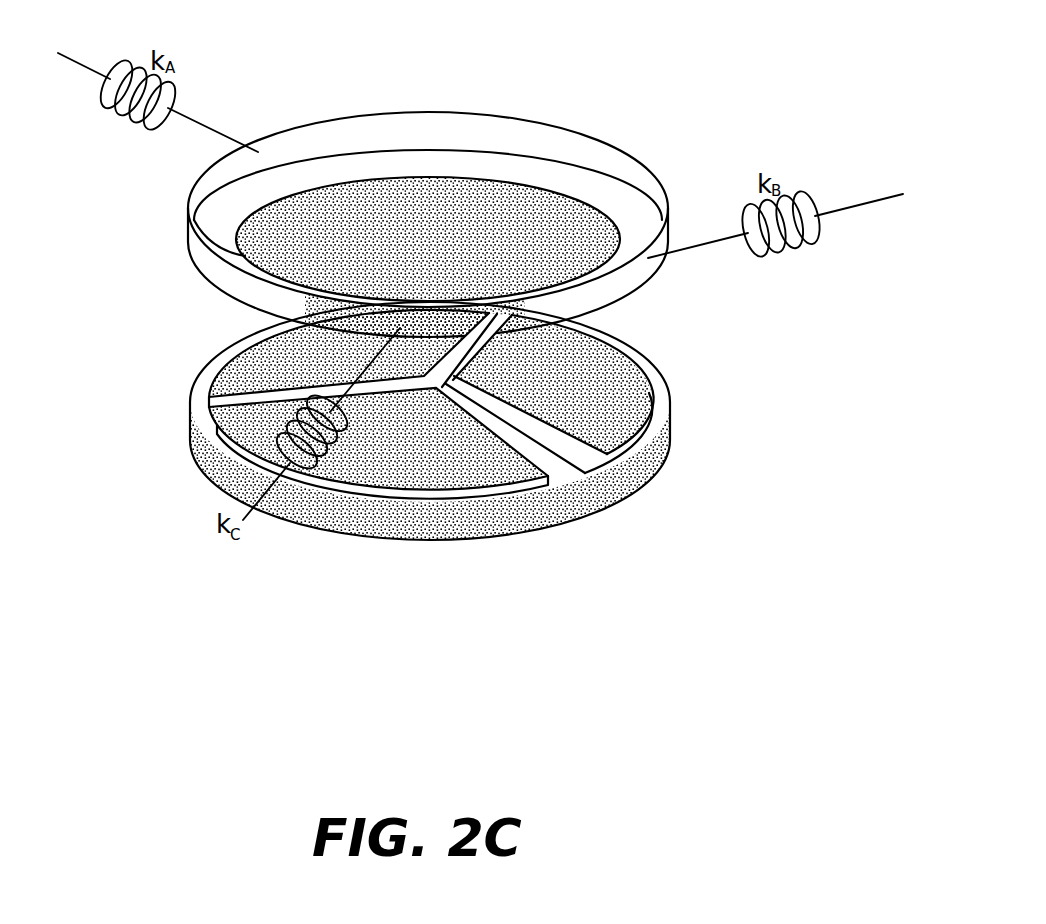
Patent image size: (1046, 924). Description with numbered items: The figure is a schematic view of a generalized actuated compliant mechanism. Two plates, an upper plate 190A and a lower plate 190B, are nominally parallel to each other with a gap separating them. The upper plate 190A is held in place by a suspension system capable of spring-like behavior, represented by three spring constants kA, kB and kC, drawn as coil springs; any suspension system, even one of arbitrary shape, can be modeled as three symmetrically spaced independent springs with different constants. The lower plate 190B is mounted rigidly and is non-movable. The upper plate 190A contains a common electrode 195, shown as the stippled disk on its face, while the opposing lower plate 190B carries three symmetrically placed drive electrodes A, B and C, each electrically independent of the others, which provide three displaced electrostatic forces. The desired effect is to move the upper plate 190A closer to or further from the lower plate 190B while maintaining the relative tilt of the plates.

The upper plate 190A is at (597, 145).
The lower plate 190B is at (662, 408).
The common electrode 195 is at (440, 185).